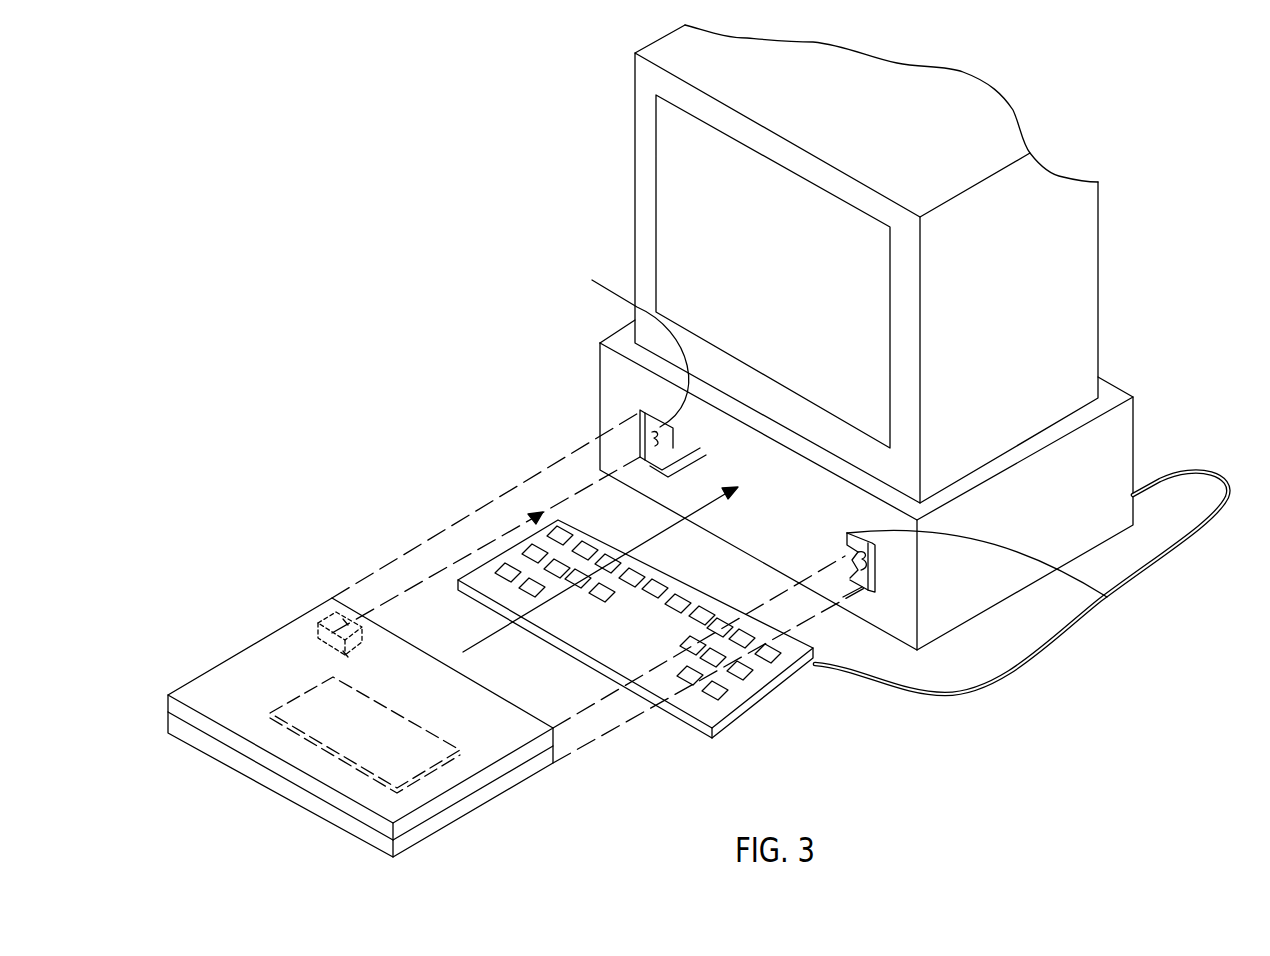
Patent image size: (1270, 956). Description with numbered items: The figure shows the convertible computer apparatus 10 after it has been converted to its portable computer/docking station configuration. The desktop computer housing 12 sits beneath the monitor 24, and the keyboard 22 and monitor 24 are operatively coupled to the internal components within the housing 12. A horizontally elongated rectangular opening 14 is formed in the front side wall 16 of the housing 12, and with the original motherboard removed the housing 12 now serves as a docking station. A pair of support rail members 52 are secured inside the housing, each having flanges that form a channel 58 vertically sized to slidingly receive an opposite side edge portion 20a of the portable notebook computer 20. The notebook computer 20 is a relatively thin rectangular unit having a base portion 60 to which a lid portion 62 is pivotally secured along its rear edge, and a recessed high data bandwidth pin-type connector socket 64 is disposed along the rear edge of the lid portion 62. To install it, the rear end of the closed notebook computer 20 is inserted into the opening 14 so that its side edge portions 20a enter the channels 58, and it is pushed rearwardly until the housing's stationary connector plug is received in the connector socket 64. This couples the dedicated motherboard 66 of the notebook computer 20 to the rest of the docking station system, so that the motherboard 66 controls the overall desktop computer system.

The convertible computer apparatus 10 is at (562, 328).
The desktop computer housing 12 is at (596, 374).
The horizontally elongated rectangular opening 14 is at (703, 492).
The front side wall 16 is at (903, 573).
The portable notebook computer 20 is at (389, 704).
The side edge portions 20a is at (263, 657).
The keyboard 22 is at (773, 687).
The monitor 24 is at (650, 180).
The support rail members 52 is at (622, 442).
The channel 58 is at (1140, 608).
The base portion 60 is at (422, 836).
The lid portion 62 is at (450, 804).
The connector socket 64 is at (353, 592).
The dedicated motherboard 66 is at (347, 758).